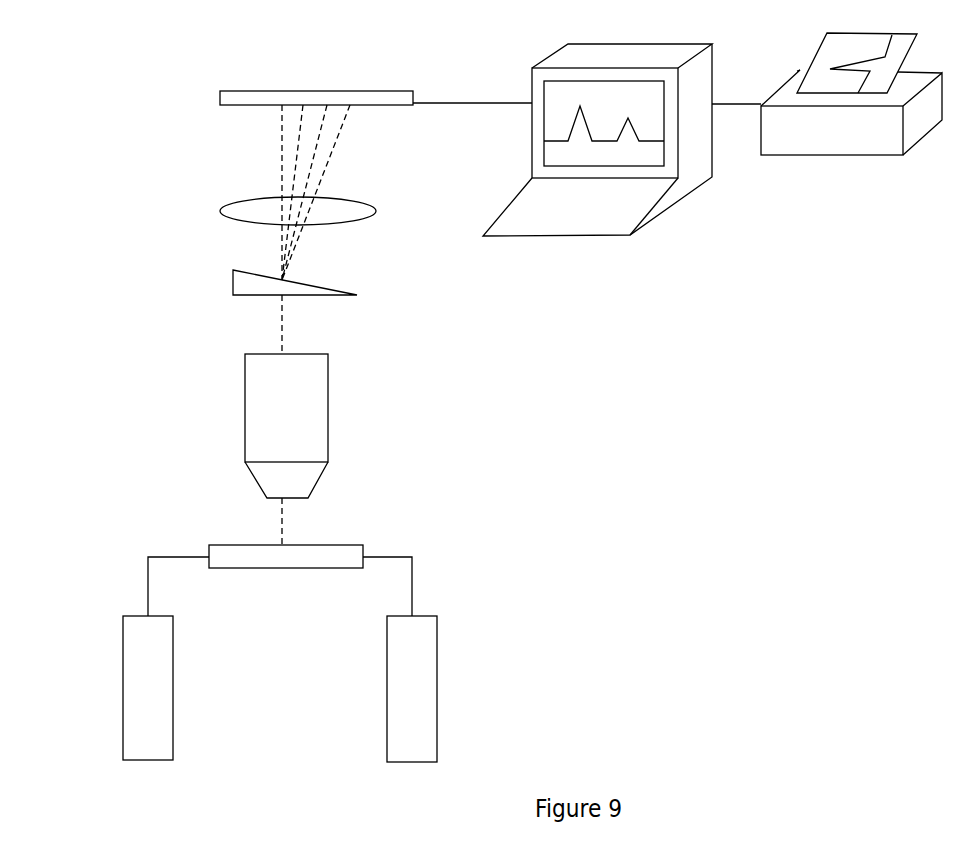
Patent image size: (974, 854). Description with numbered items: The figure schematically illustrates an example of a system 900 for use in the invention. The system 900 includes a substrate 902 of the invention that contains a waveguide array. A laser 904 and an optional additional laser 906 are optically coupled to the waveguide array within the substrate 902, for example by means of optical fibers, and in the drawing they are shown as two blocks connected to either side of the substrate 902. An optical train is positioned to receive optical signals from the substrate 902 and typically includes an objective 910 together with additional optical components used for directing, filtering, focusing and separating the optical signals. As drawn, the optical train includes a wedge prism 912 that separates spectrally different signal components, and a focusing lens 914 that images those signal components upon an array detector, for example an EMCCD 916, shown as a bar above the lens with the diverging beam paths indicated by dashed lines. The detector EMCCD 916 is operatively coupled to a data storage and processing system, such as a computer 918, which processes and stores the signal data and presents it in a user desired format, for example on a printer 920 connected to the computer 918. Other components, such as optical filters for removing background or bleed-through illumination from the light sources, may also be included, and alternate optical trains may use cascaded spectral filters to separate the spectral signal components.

The system 900 is at (113, 97).
The substrate 902 is at (292, 567).
The laser 904 is at (412, 689).
The additional laser 906 is at (148, 688).
The objective 910 is at (286, 426).
The wedge prism 912 is at (222, 282).
The focusing lens 914 is at (210, 211).
The EMCCD 916 is at (384, 80).
The computer 918 is at (597, 140).
The printer 920 is at (851, 94).